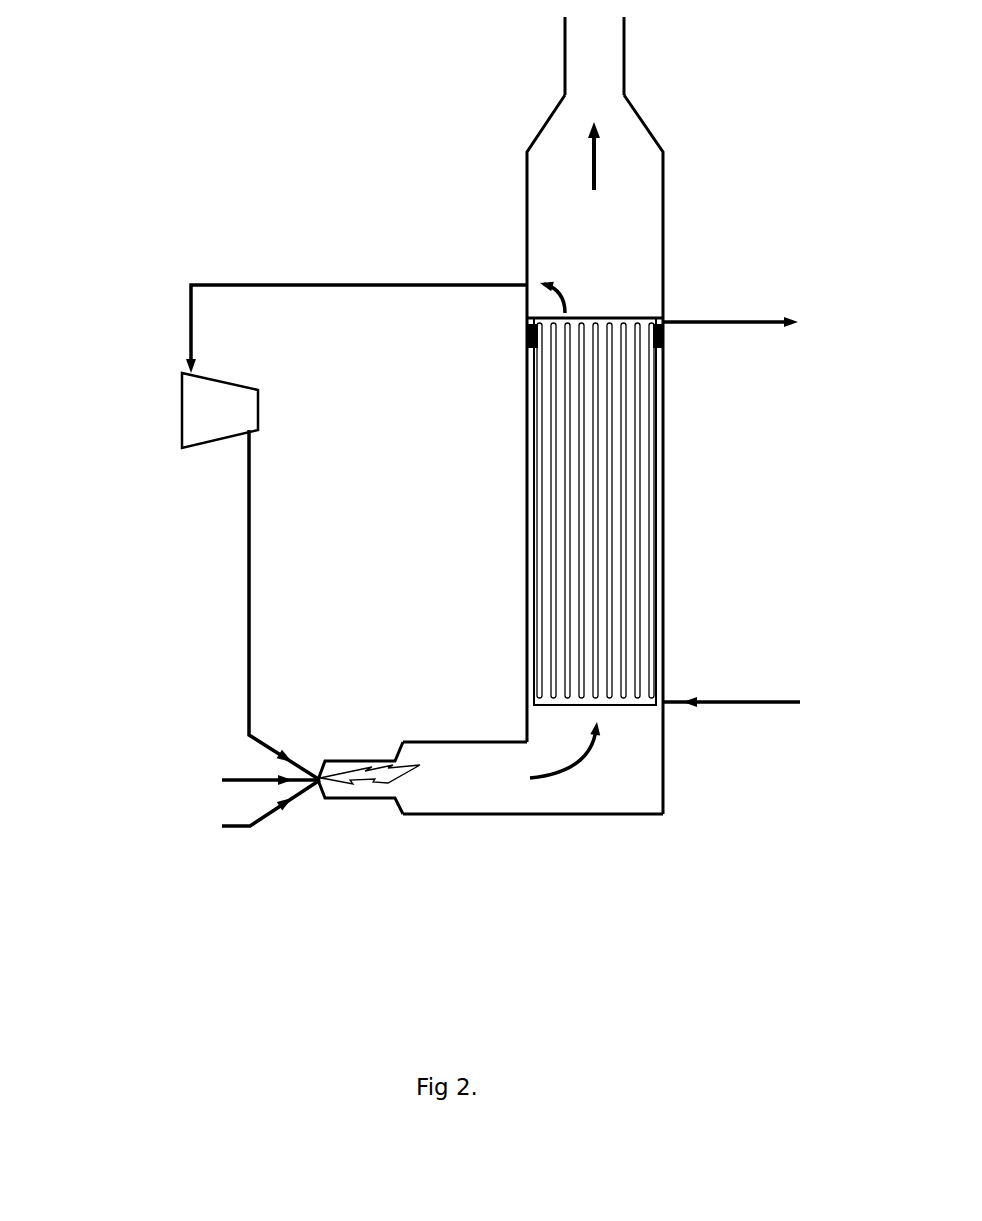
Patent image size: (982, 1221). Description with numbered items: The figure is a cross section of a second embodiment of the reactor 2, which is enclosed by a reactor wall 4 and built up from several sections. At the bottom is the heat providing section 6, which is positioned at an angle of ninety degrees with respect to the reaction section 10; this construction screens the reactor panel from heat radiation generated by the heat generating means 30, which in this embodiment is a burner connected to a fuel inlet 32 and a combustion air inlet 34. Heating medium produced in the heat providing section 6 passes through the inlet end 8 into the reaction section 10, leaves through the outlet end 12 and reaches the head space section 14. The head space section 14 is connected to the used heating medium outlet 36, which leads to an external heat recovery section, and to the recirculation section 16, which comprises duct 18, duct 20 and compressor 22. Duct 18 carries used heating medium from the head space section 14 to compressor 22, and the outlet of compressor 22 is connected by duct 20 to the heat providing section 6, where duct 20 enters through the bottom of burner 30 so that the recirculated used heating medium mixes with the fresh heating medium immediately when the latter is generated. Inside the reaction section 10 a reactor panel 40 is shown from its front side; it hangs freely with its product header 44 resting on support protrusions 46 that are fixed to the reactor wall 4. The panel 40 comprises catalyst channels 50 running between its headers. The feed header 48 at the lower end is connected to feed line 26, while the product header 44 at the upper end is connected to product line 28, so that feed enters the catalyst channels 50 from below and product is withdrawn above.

The power plant / boiler apparatus 2 is at (708, 195).
The reactor wall 4 is at (662, 252).
The heat providing section 6 is at (458, 786).
The inlet end 8 is at (619, 738).
The reaction section 10 is at (623, 470).
The outlet end 12 is at (589, 301).
The head space section 14 is at (587, 224).
The recirculation section 16 is at (152, 494).
The duct 18 is at (424, 285).
The duct 20 is at (249, 545).
The compressor 22 is at (204, 421).
The feed line 26 is at (763, 705).
The product line 28 is at (752, 324).
The heat generating means 30 is at (335, 782).
The fuel inlet 32 is at (222, 781).
The combustion air inlet 34 is at (222, 825).
The used heating medium outlet 36 is at (584, 76).
The reactor panel 40 is at (597, 510).
The product header 44 is at (633, 320).
The support protrusions 46 is at (527, 341).
The feed header 48 is at (610, 698).
The catalyst channels 50 is at (543, 437).